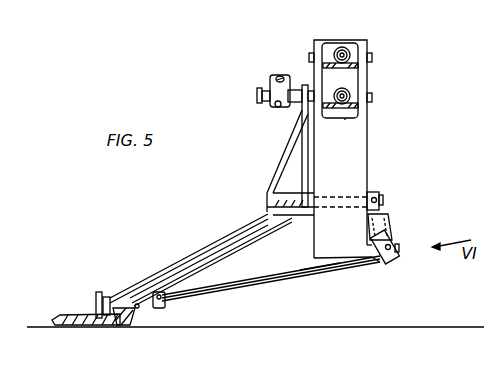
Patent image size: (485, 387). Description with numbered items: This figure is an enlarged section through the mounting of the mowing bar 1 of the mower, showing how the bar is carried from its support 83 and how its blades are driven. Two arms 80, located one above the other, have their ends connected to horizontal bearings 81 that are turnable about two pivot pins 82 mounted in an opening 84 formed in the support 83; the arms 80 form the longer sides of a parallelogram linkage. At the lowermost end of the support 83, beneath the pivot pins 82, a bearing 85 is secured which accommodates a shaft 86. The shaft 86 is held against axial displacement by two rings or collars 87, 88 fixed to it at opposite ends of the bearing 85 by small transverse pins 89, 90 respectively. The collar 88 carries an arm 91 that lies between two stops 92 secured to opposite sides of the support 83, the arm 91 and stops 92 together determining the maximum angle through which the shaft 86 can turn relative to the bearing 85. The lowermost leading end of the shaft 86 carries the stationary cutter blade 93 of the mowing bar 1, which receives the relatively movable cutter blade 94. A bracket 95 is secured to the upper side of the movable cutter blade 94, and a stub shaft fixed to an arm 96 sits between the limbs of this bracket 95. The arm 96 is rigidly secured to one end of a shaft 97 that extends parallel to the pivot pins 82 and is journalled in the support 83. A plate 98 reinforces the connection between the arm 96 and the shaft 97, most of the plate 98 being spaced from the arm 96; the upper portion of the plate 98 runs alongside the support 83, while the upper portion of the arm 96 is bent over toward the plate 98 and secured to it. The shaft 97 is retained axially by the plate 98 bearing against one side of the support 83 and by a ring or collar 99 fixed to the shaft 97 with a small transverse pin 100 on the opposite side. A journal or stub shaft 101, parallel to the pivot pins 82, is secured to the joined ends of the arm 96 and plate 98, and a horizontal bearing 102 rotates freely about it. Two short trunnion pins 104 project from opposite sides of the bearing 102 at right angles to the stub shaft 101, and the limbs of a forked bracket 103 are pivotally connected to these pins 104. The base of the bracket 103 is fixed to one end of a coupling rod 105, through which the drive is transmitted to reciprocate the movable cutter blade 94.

The mowing bar 1 is at (54, 321).
The arms 80 is at (365, 80).
The horizontal bearings 81 is at (328, 50).
The pivot pins 82 is at (372, 55).
The support 83 is at (376, 144).
The opening 84 is at (345, 120).
The bearing 85 is at (317, 271).
The shaft 86 is at (139, 308).
The ring or collar 87 is at (180, 299).
The ring or collar 88 is at (382, 262).
The transverse pin 89 is at (165, 305).
The transverse pin 90 is at (396, 258).
The arm 91 is at (402, 232).
The stops 92 is at (395, 226).
The stationary cutter blade 93 is at (120, 323).
The movable cutter blade 94 is at (88, 323).
The bracket 95 is at (94, 296).
The arm 96 is at (170, 264).
The shaft 97 is at (349, 197).
The plate 98 is at (255, 244).
The ring or collar 99 is at (376, 197).
The transverse pin 100 is at (382, 203).
The journal or stub shaft 101 is at (257, 95).
The horizontal bearing 102 is at (265, 108).
The forked bracket 103 is at (270, 80).
The trunnion pins 104 is at (284, 112).
The coupling rod 105 is at (279, 74).